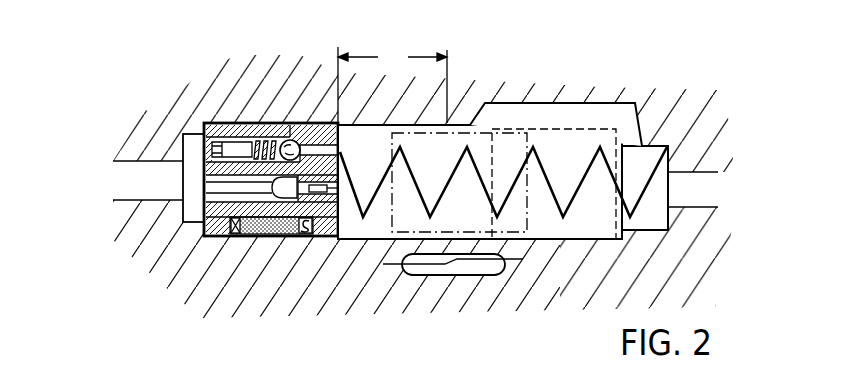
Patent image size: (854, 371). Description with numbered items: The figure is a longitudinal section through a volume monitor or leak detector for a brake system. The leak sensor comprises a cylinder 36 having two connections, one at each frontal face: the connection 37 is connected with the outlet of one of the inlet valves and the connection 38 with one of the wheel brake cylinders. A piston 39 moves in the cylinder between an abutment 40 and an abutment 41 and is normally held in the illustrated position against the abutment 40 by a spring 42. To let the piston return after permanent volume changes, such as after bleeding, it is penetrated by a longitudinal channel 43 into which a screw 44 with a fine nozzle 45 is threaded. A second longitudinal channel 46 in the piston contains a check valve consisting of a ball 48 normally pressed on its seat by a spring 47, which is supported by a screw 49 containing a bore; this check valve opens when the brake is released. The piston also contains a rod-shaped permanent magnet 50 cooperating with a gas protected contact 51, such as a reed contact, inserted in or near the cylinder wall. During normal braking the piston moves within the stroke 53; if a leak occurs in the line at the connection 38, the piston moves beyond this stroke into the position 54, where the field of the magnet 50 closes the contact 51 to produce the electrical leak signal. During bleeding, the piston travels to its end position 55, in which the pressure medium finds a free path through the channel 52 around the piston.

The cylinder 36 is at (363, 242).
The connection 37 is at (130, 182).
The connection 38 is at (700, 190).
The piston 39 is at (216, 240).
The abutment 40 is at (198, 121).
The abutment 41 is at (623, 242).
The spring 42 is at (543, 169).
The longitudinal channel 43 is at (252, 240).
The screw 44 is at (318, 238).
The nozzle 45 is at (290, 240).
The second longitudinal channel 46 is at (319, 122).
The spring 47 is at (253, 122).
The ball 48 is at (285, 122).
The screw 49 is at (225, 122).
The permanent magnet 50 is at (245, 240).
The gas protected contact 51 is at (438, 267).
The channel 52 is at (555, 115).
The stroke 53 is at (392, 83).
The position 54 is at (392, 143).
The end position 55 is at (490, 210).